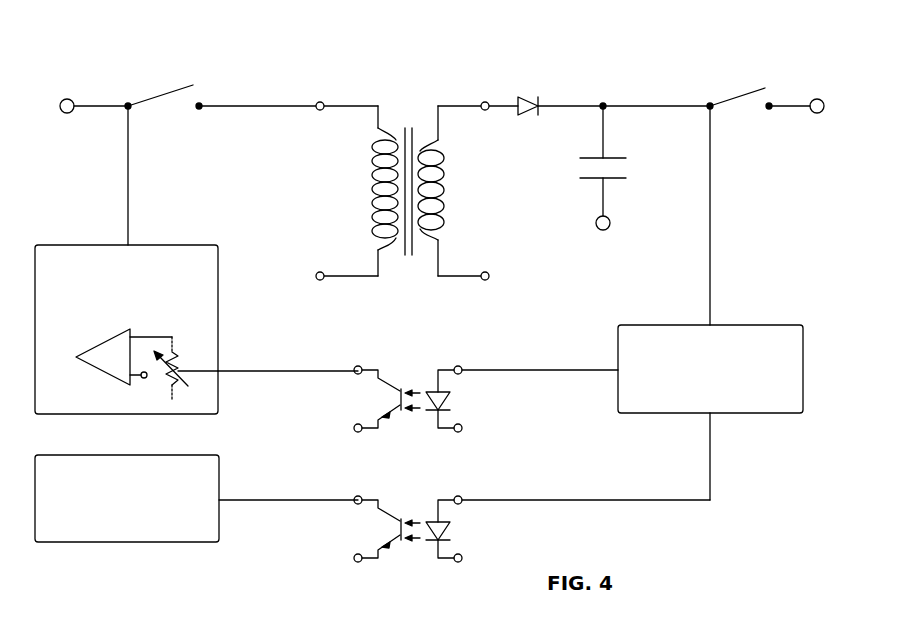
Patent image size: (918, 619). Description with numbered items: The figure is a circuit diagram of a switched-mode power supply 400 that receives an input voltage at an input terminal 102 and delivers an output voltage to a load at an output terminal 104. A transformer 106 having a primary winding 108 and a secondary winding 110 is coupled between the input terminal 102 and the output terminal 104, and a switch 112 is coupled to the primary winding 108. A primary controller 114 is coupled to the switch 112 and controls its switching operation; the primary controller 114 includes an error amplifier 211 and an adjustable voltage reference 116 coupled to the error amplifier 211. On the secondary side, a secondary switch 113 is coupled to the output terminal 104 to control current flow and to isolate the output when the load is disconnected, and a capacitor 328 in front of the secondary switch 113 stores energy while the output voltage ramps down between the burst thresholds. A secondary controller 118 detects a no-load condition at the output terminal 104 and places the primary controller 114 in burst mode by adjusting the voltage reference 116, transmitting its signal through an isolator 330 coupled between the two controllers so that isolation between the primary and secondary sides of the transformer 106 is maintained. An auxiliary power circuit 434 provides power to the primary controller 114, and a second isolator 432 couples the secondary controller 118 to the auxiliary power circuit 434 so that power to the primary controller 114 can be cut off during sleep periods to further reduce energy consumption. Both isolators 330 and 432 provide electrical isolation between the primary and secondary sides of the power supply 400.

The switched-mode power supply 400 is at (515, 27).
The input terminal 102 is at (66, 98).
The switch 112 is at (154, 77).
The transformer 106 is at (409, 109).
The primary winding 108 is at (375, 226).
The secondary winding 110 is at (444, 197).
The capacitor 328 is at (582, 193).
The secondary switch 113 is at (739, 66).
The output terminal 104 is at (815, 98).
The primary controller 114 is at (163, 414).
The error amplifier 211 is at (106, 370).
The voltage reference 116 is at (172, 346).
The isolator 330 is at (426, 350).
The isolator 432 is at (426, 480).
The secondary controller 118 is at (745, 414).
The auxiliary power circuit 434 is at (160, 542).